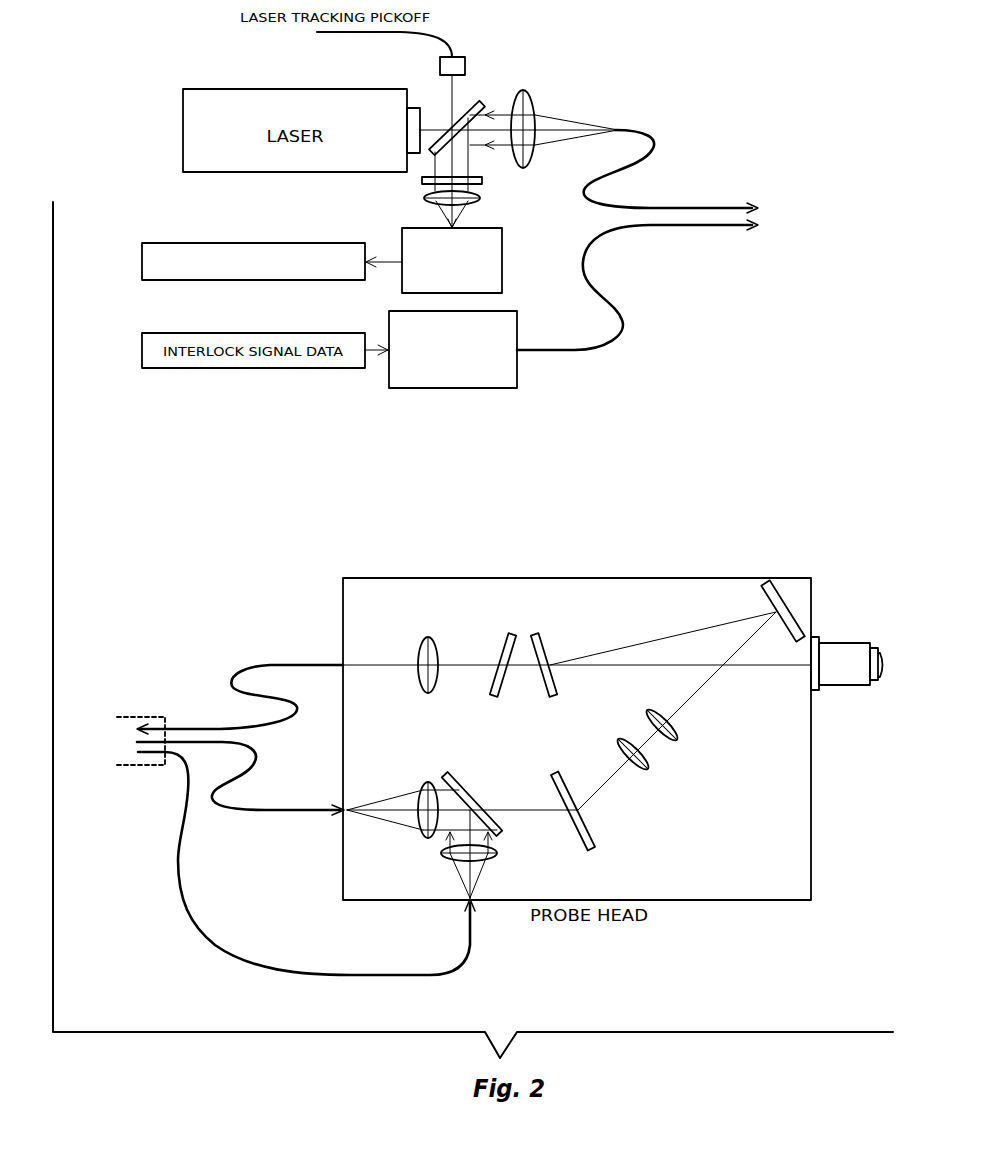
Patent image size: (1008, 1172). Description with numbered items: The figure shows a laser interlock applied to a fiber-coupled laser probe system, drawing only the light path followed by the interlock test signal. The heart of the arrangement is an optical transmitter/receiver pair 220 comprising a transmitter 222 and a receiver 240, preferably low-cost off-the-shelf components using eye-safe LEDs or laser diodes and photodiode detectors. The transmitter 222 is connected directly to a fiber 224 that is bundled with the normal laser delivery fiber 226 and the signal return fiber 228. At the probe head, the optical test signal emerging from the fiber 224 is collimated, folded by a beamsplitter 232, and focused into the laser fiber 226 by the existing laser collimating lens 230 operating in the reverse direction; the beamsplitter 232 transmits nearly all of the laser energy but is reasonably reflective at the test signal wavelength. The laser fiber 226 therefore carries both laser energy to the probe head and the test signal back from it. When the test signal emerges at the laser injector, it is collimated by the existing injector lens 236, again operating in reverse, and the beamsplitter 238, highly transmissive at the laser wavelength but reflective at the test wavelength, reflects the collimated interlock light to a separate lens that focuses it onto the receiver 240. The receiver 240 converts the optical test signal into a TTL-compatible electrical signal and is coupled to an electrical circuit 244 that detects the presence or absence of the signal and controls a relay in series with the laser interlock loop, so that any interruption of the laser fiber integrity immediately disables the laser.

The optical transmitter/receiver pair 220 is at (533, 247).
The transmitter 222 is at (470, 390).
The fiber 224 is at (621, 314).
The laser fiber 226 is at (650, 129).
The signal return fiber 228 is at (272, 665).
The laser collimating lens 230 is at (423, 786).
The beamsplitter 232 is at (449, 774).
The injector lens 236 is at (525, 92).
The beamsplitter 238 is at (478, 101).
The receiver 240 is at (408, 228).
The electrical circuit 244 is at (243, 281).